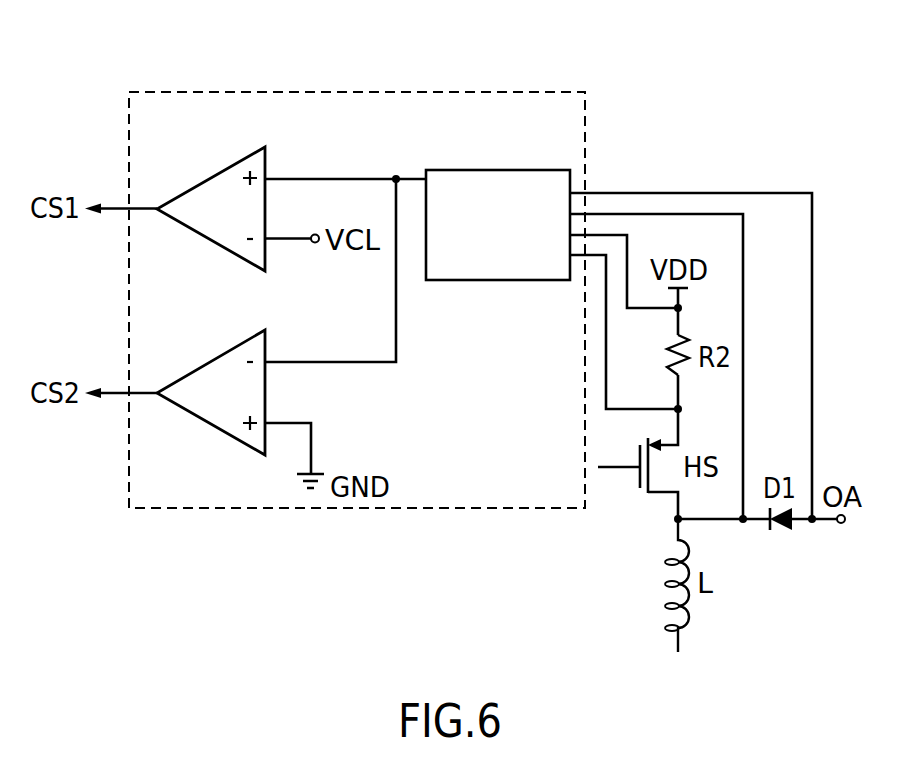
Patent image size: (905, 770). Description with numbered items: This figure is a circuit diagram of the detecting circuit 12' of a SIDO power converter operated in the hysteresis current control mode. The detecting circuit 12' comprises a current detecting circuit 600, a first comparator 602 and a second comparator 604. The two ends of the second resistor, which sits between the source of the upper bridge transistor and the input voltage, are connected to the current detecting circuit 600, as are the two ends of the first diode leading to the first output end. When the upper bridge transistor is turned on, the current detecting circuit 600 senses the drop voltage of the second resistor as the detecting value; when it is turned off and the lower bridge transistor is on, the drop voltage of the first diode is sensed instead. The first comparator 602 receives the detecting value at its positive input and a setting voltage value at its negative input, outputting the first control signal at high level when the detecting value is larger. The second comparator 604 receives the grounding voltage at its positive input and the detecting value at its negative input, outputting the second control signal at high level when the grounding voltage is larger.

The detecting circuit 12' is at (357, 265).
The current detecting circuit 600 is at (497, 170).
The first comparator 602 is at (211, 176).
The second comparator 604 is at (211, 361).